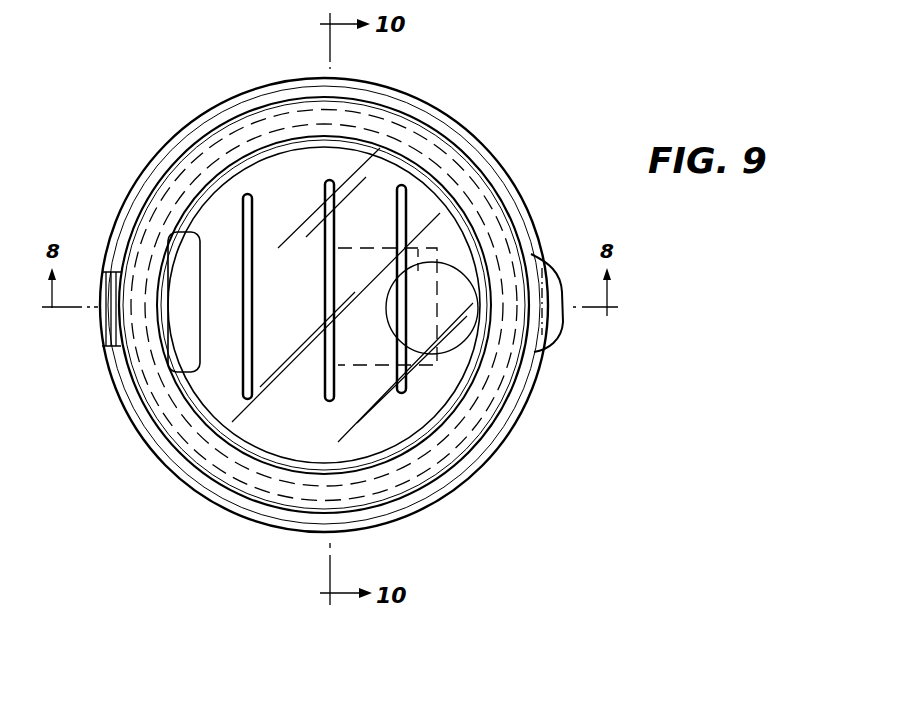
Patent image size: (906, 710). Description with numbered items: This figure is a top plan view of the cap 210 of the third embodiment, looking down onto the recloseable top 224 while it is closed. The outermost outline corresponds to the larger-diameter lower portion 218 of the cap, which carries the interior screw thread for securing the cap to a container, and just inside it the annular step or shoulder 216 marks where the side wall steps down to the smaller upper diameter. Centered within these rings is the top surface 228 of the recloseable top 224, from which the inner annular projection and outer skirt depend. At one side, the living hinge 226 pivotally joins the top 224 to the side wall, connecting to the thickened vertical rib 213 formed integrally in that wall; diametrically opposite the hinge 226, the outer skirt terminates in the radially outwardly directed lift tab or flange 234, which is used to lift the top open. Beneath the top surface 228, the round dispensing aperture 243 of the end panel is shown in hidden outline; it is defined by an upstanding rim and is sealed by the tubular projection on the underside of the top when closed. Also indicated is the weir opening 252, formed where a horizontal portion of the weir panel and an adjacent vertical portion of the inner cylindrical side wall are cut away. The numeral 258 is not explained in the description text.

The cap 210 is at (592, 90).
The thickened vertical rib 213 is at (122, 385).
The annular step or shoulder 216 is at (518, 410).
The lower portion 218 is at (473, 483).
The recloseable top 224 is at (450, 126).
The living hinge 226 is at (100, 330).
The top surface 228 is at (245, 175).
The lift tab or flange 234 is at (555, 322).
The dispensing aperture 243 is at (419, 242).
The weir opening 252 is at (190, 288).
The vent slots 258 is at (253, 296).